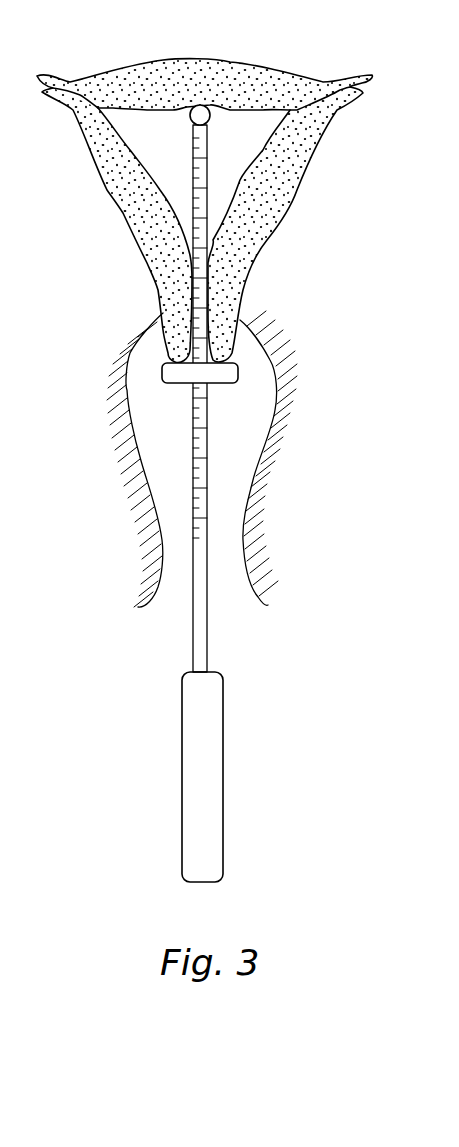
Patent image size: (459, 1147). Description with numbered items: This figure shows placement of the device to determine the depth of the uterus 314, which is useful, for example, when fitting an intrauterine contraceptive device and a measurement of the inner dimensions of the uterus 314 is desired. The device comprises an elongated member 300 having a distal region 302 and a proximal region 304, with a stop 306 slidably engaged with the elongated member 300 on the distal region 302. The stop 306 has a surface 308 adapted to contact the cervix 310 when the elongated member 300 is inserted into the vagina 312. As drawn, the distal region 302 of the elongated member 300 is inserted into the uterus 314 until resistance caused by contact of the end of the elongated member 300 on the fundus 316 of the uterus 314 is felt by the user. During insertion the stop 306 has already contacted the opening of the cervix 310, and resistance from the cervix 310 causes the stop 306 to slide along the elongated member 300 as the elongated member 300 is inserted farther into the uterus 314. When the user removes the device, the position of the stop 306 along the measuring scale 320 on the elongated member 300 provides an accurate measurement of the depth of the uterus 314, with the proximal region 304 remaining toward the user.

The elongated member 300 is at (210, 565).
The distal region 302 is at (193, 138).
The proximal region 304 is at (245, 625).
The stop 306 is at (239, 377).
The surface 308 is at (237, 362).
The cervix 310 is at (237, 353).
The vagina 312 is at (223, 493).
The uterus 314 is at (270, 65).
The fundus 316 is at (210, 103).
The measuring scale 320 is at (200, 193).